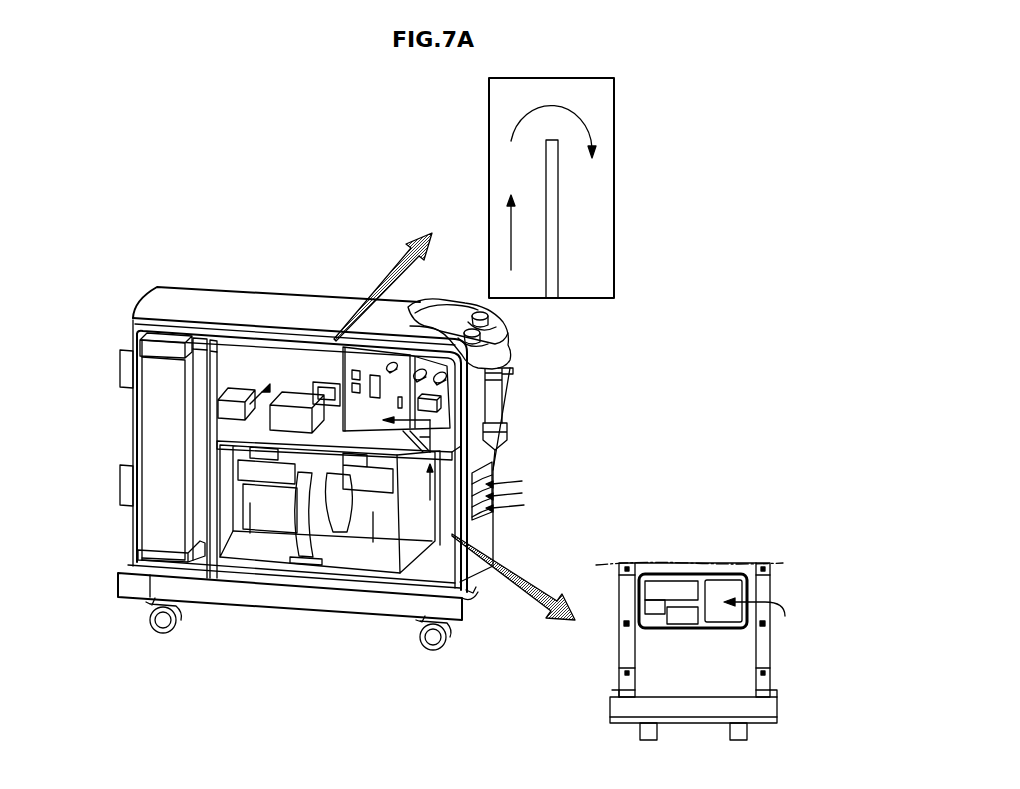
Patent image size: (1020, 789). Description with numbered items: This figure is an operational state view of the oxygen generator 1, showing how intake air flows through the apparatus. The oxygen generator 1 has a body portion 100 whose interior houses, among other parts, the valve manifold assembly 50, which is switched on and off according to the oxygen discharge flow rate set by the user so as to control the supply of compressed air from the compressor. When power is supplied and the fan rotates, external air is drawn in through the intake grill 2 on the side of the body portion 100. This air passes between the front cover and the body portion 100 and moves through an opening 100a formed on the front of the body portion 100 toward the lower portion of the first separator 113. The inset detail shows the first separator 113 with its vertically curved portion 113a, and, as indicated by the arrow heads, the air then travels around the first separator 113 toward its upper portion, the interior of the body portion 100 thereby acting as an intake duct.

The oxygen generator 1 is at (97, 218).
The body portion 100 is at (273, 291).
The valve manifold assembly 50 is at (223, 383).
The intake grill 2 is at (499, 463).
The first separator 113 is at (614, 232).
The air guide slot 113a is at (556, 199).
The opening 100a is at (720, 588).